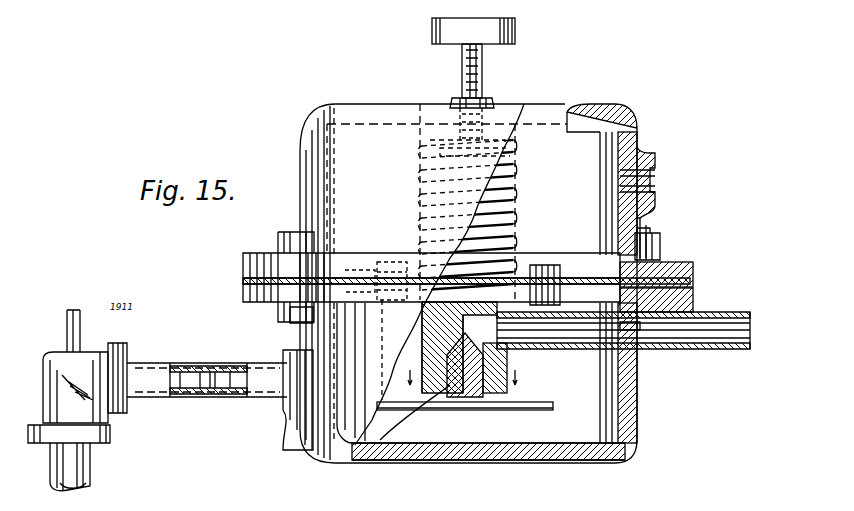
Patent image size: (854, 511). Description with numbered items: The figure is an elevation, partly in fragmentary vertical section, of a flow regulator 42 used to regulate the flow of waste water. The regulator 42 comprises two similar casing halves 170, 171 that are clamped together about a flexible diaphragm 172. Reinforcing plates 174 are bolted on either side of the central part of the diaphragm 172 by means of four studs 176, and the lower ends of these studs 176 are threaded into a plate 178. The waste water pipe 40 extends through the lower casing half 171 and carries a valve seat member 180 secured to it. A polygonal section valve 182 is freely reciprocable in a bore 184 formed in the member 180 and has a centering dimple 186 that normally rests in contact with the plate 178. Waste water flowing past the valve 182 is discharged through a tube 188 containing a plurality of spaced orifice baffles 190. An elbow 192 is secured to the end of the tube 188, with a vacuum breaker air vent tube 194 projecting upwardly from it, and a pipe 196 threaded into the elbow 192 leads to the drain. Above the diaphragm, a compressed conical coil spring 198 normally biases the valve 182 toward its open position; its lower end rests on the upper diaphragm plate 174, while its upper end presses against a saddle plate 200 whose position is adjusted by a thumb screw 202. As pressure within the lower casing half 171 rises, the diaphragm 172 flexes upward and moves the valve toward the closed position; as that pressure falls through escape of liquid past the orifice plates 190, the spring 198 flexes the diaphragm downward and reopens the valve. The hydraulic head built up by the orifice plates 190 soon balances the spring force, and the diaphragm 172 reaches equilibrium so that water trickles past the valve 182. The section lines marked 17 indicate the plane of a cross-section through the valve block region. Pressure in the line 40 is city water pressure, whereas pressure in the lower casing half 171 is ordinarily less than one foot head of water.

The waste water pipe 40 is at (708, 346).
The flow regulator 42 is at (651, 127).
The section line 17 is at (465, 370).
The upper casing half 170 is at (694, 272).
The lower casing half 171 is at (694, 297).
The flexible diaphragm 172 is at (620, 258).
The reinforcing plates 174 is at (580, 278).
The studs 176 is at (405, 380).
The plate 178 is at (522, 412).
The valve seat member 180 is at (490, 400).
The polygonal section valve 182 is at (455, 395).
The bore 184 is at (380, 440).
The centering dimple 186 is at (472, 400).
The tube 188 is at (195, 398).
The orifice baffles 190 is at (220, 398).
The elbow 192 is at (90, 352).
The vacuum breaker air vent tube 194 is at (82, 323).
The pipe 196 is at (92, 466).
The conical coil spring 198 is at (426, 108).
The saddle plate 200 is at (518, 116).
The thumb screw 202 is at (432, 30).